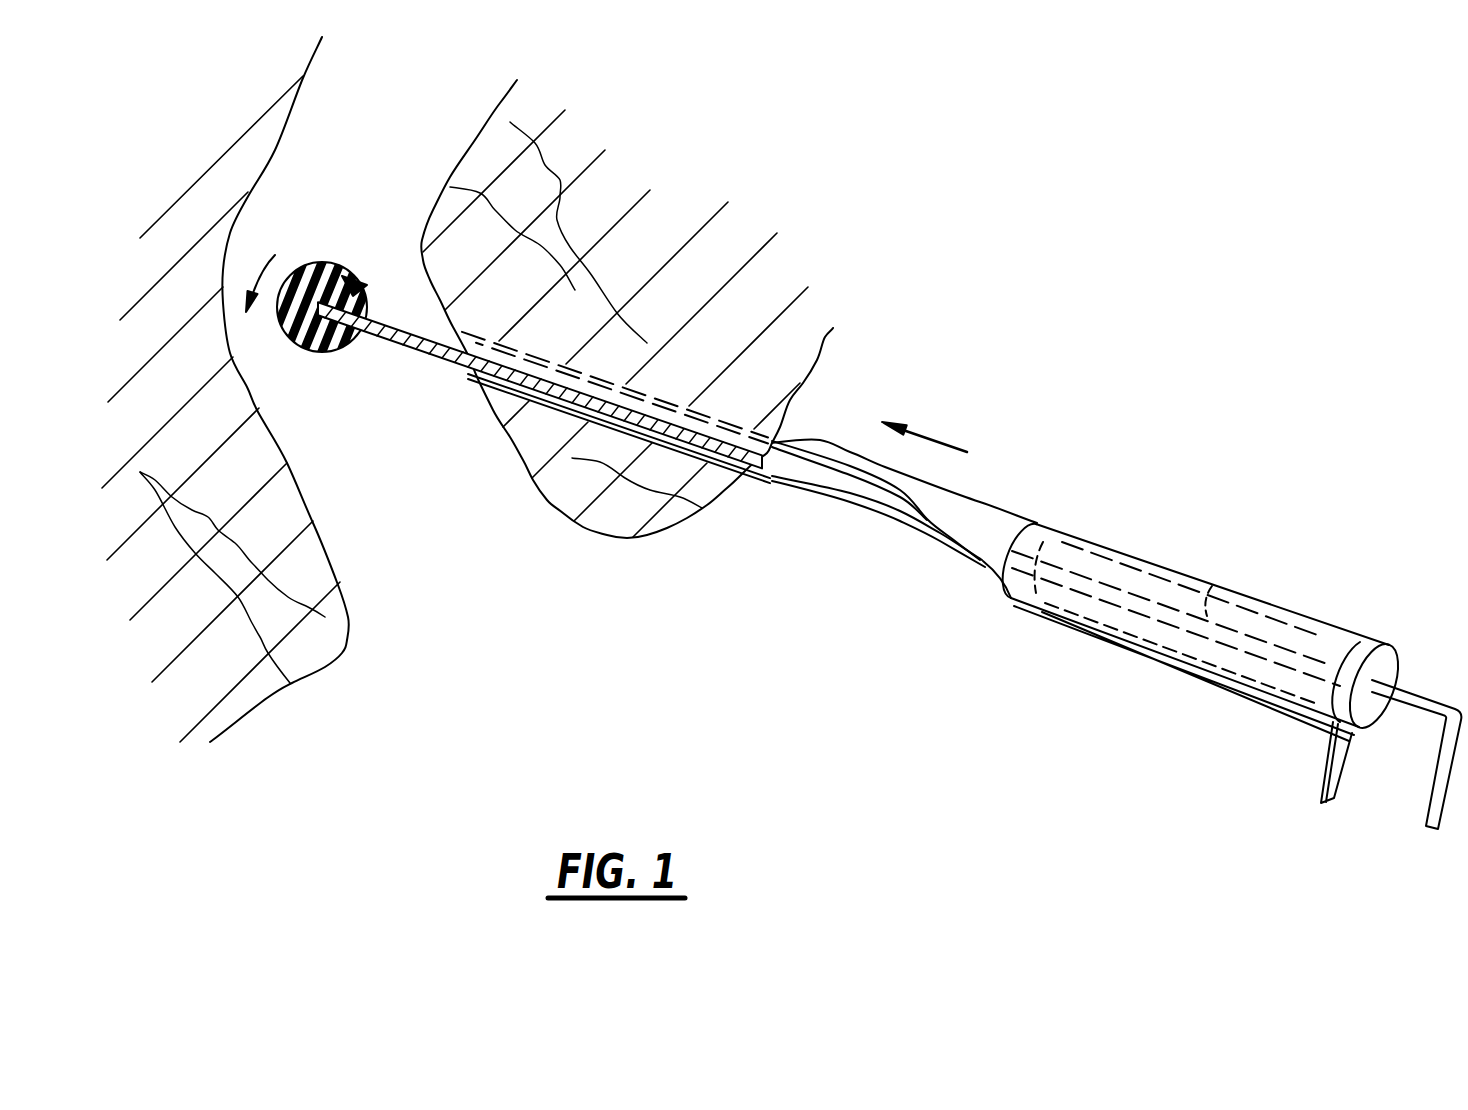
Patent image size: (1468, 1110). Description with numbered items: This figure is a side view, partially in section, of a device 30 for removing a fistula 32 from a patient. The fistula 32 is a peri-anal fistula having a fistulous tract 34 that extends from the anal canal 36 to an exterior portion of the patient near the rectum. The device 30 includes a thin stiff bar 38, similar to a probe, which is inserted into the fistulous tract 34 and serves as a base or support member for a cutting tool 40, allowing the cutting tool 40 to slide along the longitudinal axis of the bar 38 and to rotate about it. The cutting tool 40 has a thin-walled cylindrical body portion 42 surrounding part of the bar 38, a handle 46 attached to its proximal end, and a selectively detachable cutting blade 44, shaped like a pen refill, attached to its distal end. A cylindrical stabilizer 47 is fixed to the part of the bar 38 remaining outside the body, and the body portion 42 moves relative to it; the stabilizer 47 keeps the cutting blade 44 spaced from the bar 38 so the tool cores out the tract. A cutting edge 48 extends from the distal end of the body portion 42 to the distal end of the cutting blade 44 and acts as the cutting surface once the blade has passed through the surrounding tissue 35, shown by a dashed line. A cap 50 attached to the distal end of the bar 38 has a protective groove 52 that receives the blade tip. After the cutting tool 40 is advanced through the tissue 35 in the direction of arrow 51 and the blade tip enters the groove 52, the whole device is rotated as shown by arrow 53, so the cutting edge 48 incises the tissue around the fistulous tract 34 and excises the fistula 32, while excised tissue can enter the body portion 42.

The device 30 is at (851, 535).
The fistula 32 is at (738, 405).
The fistulous tract 34 is at (553, 408).
The tissue 35 is at (694, 306).
The anal canal 36 is at (400, 462).
The bar 38 is at (863, 511).
The cutting tool 40 is at (1123, 554).
The body portion 42 is at (1143, 648).
The cutting blade 44 is at (969, 570).
The handle 46 is at (1335, 798).
The stabilizer 47 is at (1212, 588).
The cutting edge 48 is at (840, 467).
The cap 50 is at (314, 247).
The arrow 51 is at (927, 438).
The protective groove 52 is at (366, 286).
The arrow 53 is at (272, 258).